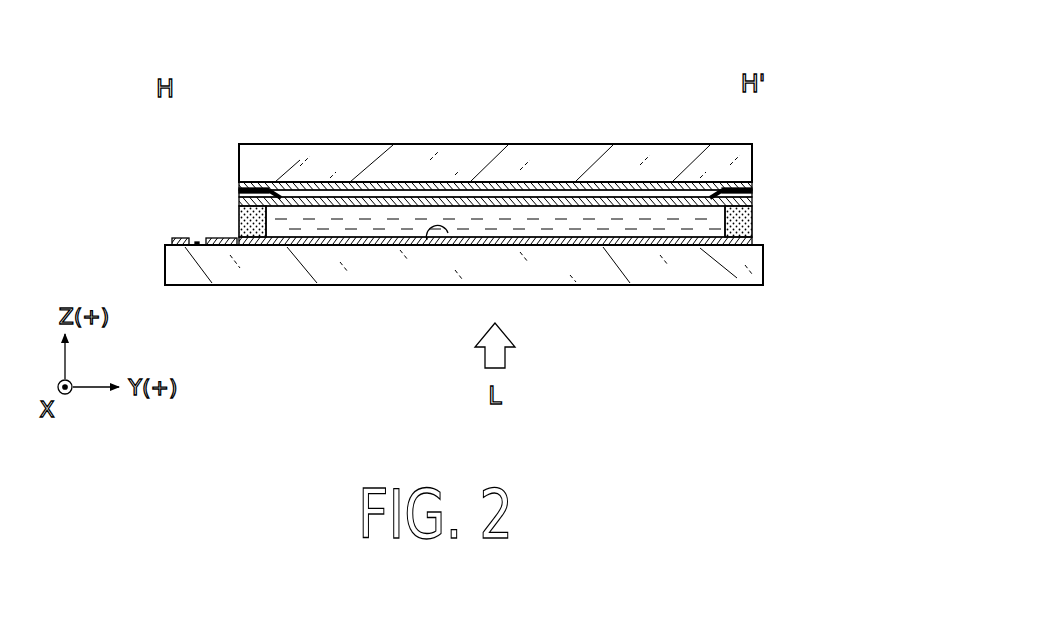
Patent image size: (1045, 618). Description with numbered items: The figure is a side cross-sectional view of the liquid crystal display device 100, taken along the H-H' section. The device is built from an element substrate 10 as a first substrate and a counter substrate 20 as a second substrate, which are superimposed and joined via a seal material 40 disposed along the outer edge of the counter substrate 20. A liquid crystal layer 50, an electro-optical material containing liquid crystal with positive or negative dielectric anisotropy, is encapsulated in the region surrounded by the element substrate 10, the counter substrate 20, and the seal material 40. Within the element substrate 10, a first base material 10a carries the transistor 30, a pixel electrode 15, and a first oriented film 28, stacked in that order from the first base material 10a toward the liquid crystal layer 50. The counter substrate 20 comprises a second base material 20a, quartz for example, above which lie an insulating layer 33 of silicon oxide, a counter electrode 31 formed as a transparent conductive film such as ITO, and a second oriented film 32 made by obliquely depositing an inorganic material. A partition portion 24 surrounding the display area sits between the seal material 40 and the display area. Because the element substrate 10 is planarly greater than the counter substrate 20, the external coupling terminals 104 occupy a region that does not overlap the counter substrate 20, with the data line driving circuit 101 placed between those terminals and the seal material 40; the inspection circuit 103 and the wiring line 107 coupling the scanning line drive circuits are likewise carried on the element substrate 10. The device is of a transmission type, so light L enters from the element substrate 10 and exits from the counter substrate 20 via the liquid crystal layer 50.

The liquid crystal display device 100 is at (653, 59).
The element substrate 10 is at (772, 238).
The first base material 10a is at (561, 268).
The pixel electrode 15 is at (357, 246).
The counter substrate 20 is at (772, 144).
The second base material 20a is at (500, 181).
The partition portion 24 is at (283, 189).
The first oriented film 28 is at (428, 241).
The transistor 30 is at (369, 357).
The counter electrode 31 is at (635, 201).
The second oriented film 32 is at (557, 194).
The insulating layer 33 is at (395, 186).
The seal material 40 is at (244, 238).
The liquid crystal layer 50 is at (617, 227).
The data line driving circuit 101 is at (218, 240).
The inspection circuit 103 is at (693, 247).
The external coupling terminals 104 is at (176, 240).
The wiring line 107 is at (729, 247).